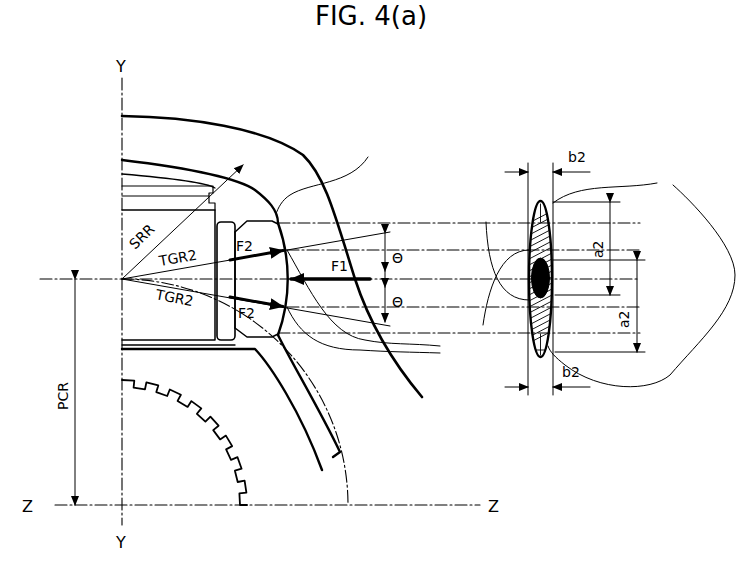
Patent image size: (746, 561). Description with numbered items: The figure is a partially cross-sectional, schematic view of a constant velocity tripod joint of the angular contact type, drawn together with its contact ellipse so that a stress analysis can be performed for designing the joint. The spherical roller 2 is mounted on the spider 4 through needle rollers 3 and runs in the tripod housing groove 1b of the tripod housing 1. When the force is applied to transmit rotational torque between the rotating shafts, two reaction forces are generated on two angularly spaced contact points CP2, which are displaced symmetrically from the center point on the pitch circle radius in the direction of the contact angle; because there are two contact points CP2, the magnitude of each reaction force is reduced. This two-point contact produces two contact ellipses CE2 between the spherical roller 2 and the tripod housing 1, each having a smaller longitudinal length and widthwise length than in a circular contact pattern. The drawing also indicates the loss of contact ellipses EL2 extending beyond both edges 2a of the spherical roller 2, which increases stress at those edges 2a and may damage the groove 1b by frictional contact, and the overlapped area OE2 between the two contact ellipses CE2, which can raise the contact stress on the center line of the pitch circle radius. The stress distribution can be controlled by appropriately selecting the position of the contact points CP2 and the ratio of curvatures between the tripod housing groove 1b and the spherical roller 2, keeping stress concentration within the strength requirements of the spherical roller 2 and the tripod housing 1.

The tripod housing 1 is at (230, 157).
The tripod housing groove 1b is at (329, 175).
The spherical roller 2 is at (262, 190).
The edges of spherical roller 2a is at (278, 223).
The needle rollers 3 is at (222, 188).
The spider 4 is at (148, 210).
The contact ellipses CE2 is at (528, 247).
The overlapped area OE2 is at (555, 260).
The loss of contact ellipses EL2 is at (641, 275).
The contact points CP2 is at (528, 307).